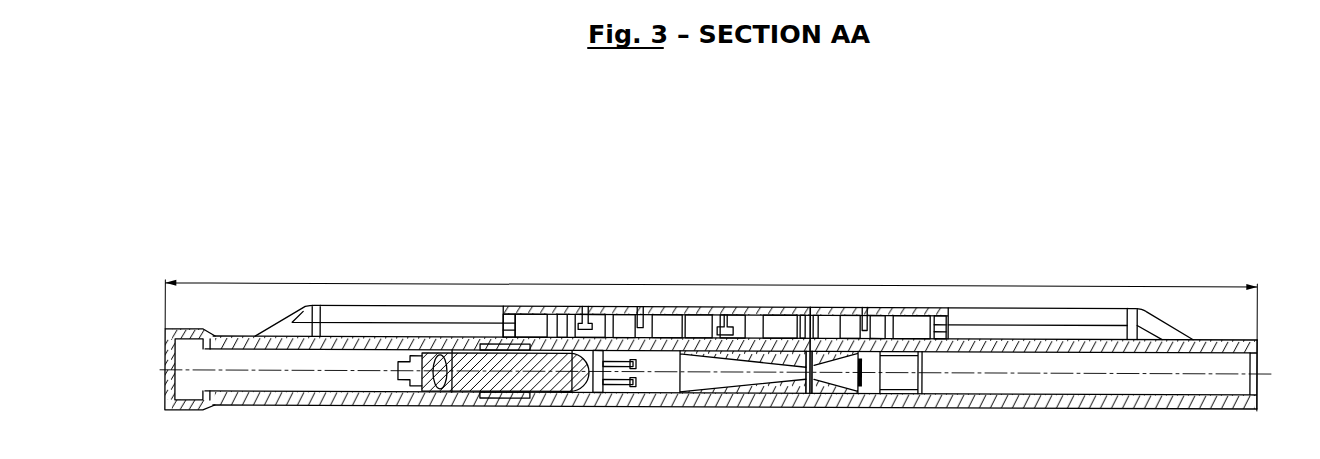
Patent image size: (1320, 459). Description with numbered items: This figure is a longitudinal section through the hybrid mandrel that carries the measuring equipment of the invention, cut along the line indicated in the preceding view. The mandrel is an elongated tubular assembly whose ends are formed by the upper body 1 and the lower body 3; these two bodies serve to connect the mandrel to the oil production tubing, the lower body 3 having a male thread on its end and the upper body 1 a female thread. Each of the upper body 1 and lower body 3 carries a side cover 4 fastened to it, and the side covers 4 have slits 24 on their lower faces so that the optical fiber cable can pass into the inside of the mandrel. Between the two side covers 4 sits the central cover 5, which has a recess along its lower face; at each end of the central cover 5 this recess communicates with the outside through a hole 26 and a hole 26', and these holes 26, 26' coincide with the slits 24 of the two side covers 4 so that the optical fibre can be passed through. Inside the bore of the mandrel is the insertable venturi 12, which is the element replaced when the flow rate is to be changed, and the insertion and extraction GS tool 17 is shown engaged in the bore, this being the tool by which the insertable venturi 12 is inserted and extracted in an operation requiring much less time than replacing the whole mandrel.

The upper body 1 is at (233, 334).
The lower body 3 is at (1223, 342).
The side cover 4 is at (392, 306).
The central cover 5 is at (722, 318).
The insertable venturi 12 is at (810, 322).
The insertion and extraction GS tool 17 is at (476, 338).
The slit 24 is at (342, 322).
The hole 26 is at (534, 237).
The hole 26' is at (957, 232).